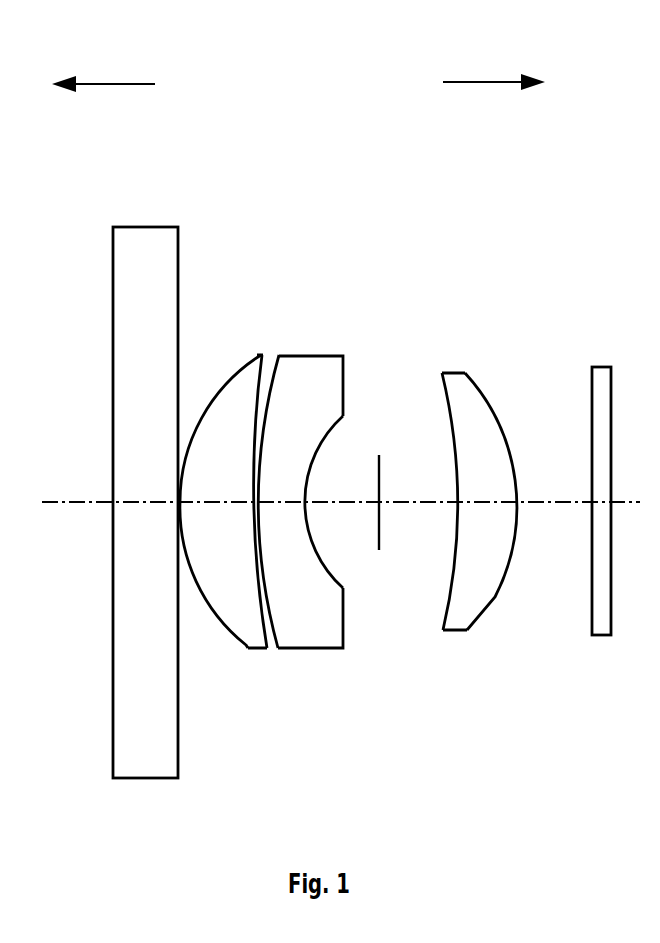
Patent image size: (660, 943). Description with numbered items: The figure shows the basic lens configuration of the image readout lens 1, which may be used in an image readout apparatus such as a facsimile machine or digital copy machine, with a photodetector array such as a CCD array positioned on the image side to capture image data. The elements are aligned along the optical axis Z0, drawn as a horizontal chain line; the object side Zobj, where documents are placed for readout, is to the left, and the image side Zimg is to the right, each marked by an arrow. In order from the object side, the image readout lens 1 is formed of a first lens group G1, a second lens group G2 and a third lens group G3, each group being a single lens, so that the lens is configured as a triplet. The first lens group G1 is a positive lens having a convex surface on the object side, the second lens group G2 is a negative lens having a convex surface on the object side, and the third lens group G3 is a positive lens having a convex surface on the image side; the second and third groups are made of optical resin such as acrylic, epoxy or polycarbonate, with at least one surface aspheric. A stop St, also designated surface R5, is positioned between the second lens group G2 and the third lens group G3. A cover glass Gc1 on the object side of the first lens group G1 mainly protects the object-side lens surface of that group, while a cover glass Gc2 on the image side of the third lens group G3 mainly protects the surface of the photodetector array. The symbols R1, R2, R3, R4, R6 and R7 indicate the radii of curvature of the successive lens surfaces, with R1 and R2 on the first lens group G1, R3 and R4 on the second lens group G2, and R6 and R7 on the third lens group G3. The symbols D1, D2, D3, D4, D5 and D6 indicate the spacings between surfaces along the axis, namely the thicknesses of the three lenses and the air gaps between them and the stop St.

The image readout lens 1 is at (271, 214).
The cover glass Gc1 is at (154, 232).
The cover glass Gc2 is at (598, 372).
The first lens group G1 is at (223, 482).
The second lens group G2 is at (300, 492).
The third lens group G3 is at (466, 475).
The stop St is at (381, 517).
The radius of curvature R5 is at (399, 521).
The radius of curvature R1 is at (212, 612).
The radius of curvature R2 is at (258, 612).
The radius of curvature R3 is at (270, 633).
The radius of curvature R4 is at (323, 573).
The radius of curvature R6 is at (443, 597).
The radius of curvature R7 is at (495, 597).
The surface spacing D1 is at (217, 485).
The surface spacing D2 is at (258, 445).
The surface spacing D3 is at (280, 485).
The surface spacing D4 is at (343, 485).
The surface spacing D5 is at (416, 485).
The surface spacing D6 is at (478, 485).
The optical axis Z0 is at (58, 512).
The object side Zobj is at (117, 82).
The image side Zimg is at (481, 80).